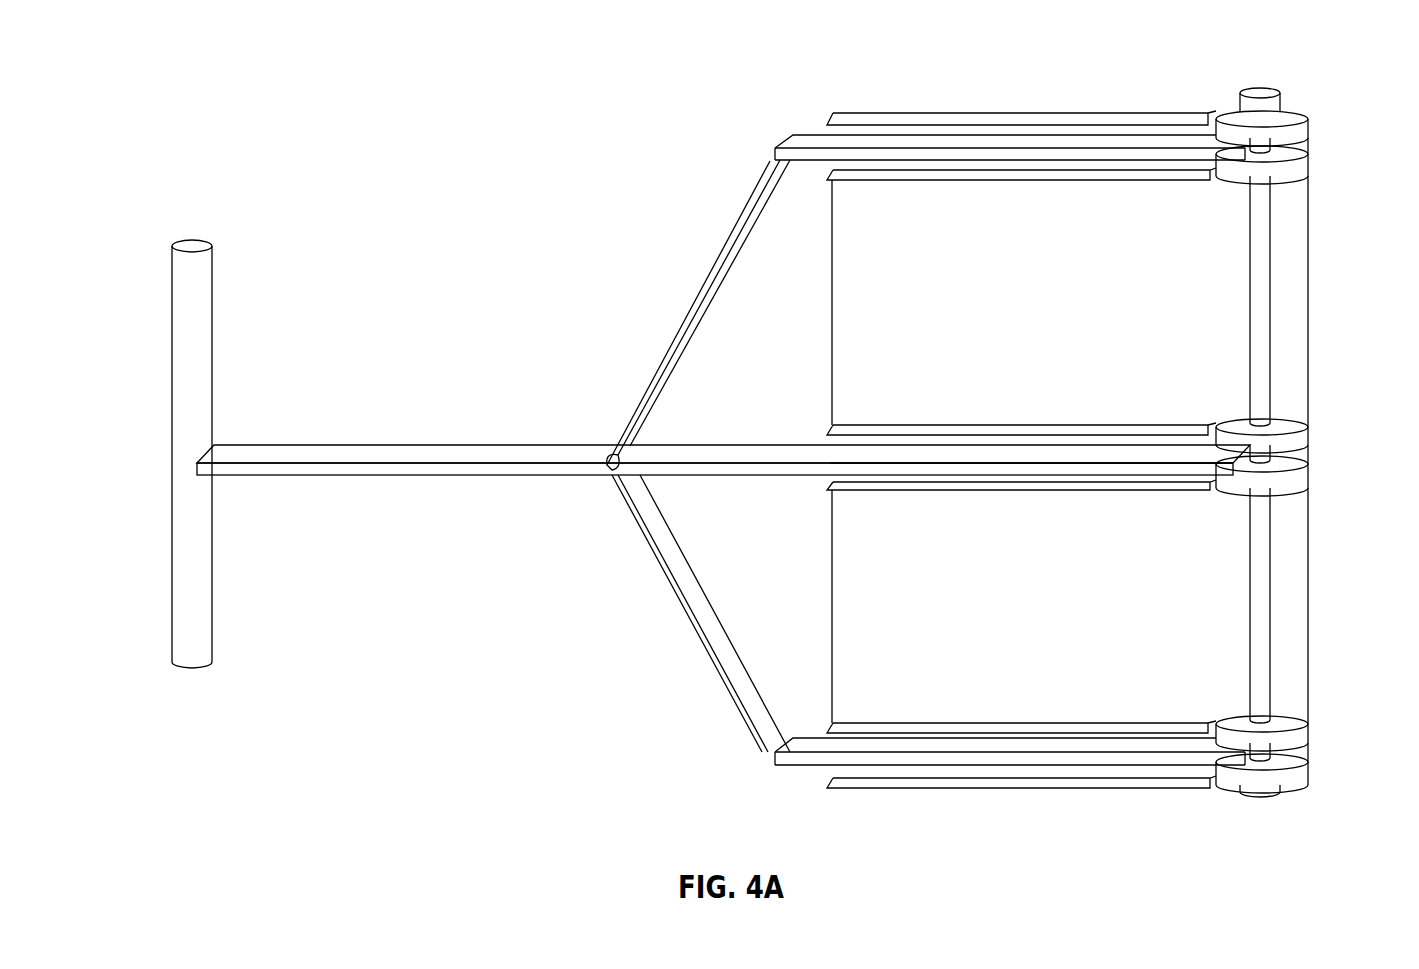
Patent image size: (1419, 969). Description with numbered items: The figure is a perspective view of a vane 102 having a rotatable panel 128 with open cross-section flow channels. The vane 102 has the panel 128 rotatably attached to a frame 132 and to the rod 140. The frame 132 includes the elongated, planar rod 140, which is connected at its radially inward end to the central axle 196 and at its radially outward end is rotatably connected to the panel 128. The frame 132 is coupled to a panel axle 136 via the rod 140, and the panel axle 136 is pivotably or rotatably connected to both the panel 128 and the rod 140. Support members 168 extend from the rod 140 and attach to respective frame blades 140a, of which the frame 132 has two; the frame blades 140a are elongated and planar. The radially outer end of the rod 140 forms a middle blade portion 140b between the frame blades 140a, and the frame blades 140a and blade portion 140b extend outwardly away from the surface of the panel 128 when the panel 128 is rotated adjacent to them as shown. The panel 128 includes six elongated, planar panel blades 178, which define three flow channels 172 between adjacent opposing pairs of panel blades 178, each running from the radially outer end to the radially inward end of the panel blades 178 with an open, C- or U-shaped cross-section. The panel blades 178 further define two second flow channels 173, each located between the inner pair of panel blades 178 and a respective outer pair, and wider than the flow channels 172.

The vane 102 is at (254, 80).
The panel 128 is at (1324, 306).
The frame 132 is at (440, 280).
The panel axle 136 is at (1260, 340).
The rod 140 is at (502, 445).
The frame blades 140a is at (808, 135).
The middle blade portion 140b is at (762, 446).
The support members 168 is at (692, 292).
The flow channels 172 is at (822, 172).
The second flow channels 173 is at (855, 302).
The panel blades 178 is at (960, 113).
The central axle 196 is at (172, 390).